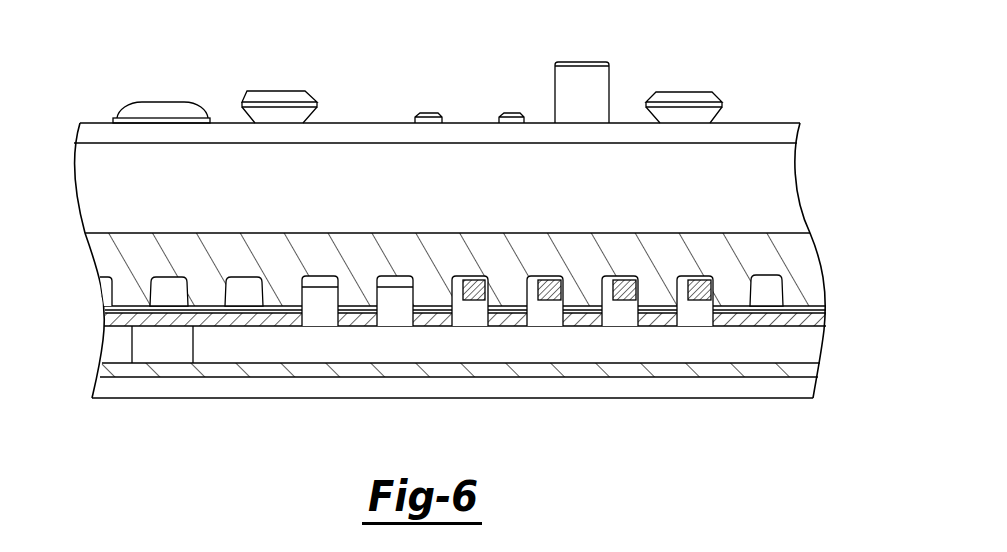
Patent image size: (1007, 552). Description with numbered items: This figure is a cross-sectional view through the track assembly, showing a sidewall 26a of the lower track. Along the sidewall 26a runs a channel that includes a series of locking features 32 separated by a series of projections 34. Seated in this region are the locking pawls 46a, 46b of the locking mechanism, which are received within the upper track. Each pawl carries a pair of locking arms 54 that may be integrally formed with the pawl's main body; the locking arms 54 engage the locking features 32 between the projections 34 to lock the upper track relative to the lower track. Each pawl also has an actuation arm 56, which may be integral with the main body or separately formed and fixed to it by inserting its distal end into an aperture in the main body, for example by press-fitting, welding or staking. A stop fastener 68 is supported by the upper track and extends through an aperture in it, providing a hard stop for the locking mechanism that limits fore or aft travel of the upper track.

The sidewall 26a is at (797, 247).
The locking feature 32 is at (784, 291).
The projection 34 is at (652, 297).
The locking pawl 46a is at (462, 272).
The locking pawl 46b is at (312, 273).
The locking arm 54 is at (392, 297).
The actuation arm 56 is at (588, 90).
The stop fastener 68 is at (182, 95).